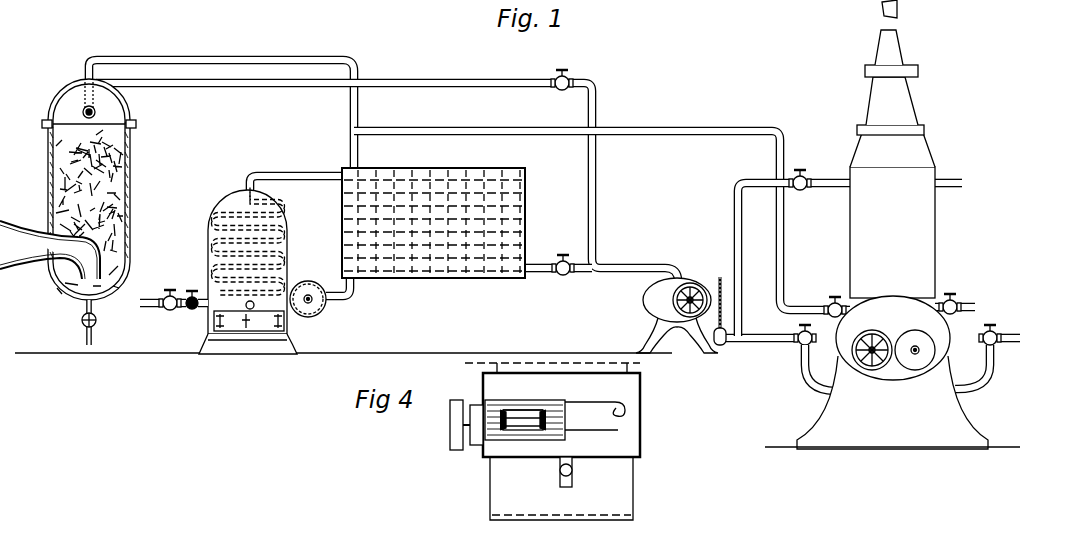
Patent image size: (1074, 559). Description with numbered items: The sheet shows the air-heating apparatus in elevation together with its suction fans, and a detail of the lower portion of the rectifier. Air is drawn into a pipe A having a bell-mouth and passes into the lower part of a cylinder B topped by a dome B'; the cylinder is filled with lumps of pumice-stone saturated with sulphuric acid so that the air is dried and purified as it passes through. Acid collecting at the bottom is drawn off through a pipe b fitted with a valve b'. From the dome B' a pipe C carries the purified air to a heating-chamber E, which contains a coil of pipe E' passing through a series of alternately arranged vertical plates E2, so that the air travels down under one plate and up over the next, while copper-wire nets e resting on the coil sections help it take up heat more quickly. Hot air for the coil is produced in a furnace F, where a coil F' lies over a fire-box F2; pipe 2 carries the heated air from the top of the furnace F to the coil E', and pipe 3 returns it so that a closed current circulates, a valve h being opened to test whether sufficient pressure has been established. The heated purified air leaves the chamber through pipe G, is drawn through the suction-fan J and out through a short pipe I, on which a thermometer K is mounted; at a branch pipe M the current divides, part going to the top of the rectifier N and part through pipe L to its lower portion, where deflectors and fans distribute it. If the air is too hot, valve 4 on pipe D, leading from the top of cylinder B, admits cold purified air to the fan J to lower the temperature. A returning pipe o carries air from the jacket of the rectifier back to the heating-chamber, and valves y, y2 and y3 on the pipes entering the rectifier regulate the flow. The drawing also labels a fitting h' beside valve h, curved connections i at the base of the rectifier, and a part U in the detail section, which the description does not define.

In FIG. 1, the pipe A is at (36, 232).
In FIG. 1, the cylinder B is at (98, 189).
In FIG. 1, the dome B' is at (62, 100).
In FIG. 1, the pipe b is at (102, 321).
In FIG. 1, the valve b' is at (102, 326).
In FIG. 1, the pipe C is at (226, 60).
In FIG. 1, the pipe D is at (280, 84).
In FIG. 1, the pipe 2 is at (300, 178).
In FIG. 1, the pipe 3 is at (344, 297).
In FIG. 1, the valve 4 is at (554, 80).
In FIG. 1, the heating-chamber E is at (426, 221).
In FIG. 1, the coil of pipe E' is at (522, 155).
In FIG. 1, the vertical plates E2 is at (436, 252).
In FIG. 1, the copper-wire nets e is at (342, 233).
In FIG. 1, the furnace F is at (232, 271).
In FIG. 1, the coil F' is at (226, 249).
In FIG. 1, the furnace F2 is at (214, 326).
In FIG. 1, the valve h is at (174, 309).
In FIG. 1, the valve h' is at (189, 310).
In FIG. 1, the branch pipe M is at (736, 240).
In FIG. 1, the pipe G is at (548, 276).
In FIG. 1, the suction-fan J is at (677, 307).
In FIG. 1, the thermometer K is at (724, 291).
In FIG. 1, the short pipe I is at (733, 343).
In FIG. 1, the pipe L is at (770, 343).
In FIG. 1, the returning pipe o is at (602, 213).
In FIG. 1, the valve y is at (884, 319).
In FIG. 1, the valve y2 is at (1000, 330).
In FIG. 1, the valve y3 is at (875, 174).
In FIG. 1, the curved pipe i is at (810, 378).
In FIG. 1, the rectifier N is at (892, 224).
In FIG. 4, the rectifier N is at (545, 441).
In FIG. 4, the roller U is at (604, 410).